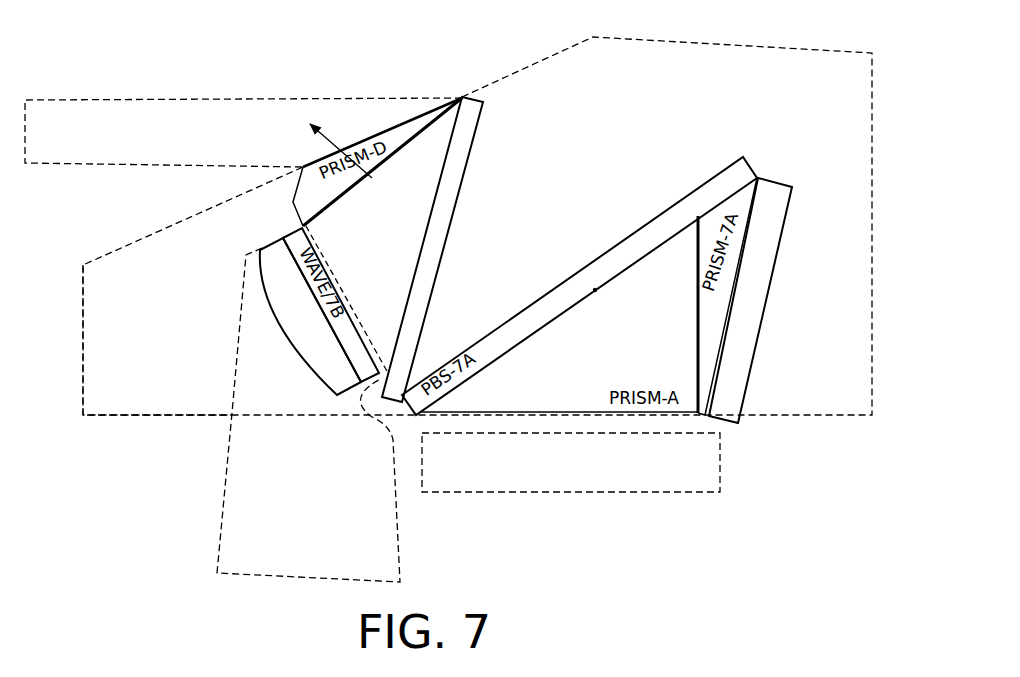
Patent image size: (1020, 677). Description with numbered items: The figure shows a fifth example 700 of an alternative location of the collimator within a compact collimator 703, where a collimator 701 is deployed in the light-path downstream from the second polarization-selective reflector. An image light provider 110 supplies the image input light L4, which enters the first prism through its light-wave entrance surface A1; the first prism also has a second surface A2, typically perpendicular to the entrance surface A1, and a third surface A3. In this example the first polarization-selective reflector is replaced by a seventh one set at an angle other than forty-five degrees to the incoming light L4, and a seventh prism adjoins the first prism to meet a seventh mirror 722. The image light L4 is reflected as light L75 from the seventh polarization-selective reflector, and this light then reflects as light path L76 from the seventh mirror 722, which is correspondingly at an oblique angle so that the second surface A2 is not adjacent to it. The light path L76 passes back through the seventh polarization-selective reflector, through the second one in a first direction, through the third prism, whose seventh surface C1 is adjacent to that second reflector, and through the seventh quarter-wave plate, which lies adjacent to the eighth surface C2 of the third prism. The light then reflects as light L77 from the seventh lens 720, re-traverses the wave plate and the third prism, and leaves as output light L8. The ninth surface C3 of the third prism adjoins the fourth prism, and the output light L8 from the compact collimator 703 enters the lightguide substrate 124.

The fifth example 700 is at (410, 69).
The collimator 701 is at (308, 415).
The compact collimator 703 is at (157, 340).
The image light provider 110 is at (571, 462).
The lightguide substrate (LOE) 124 is at (243, 132).
The seventh lens 720 is at (310, 316).
The seventh mirror 722 is at (750, 300).
The seventh surface C1 is at (438, 184).
The eighth surface C2 is at (314, 240).
The ninth surface C3 is at (364, 178).
The output light L8 is at (428, 218).
The reflected light from seventh lens L77 is at (426, 223).
The propagating light path L76 is at (757, 331).
The reflected light L75 is at (757, 332).
The image light L4 is at (595, 433).
The light-wave entrance surface A1 is at (540, 411).
The second surface A2 is at (697, 378).
The third surface A3 is at (520, 344).